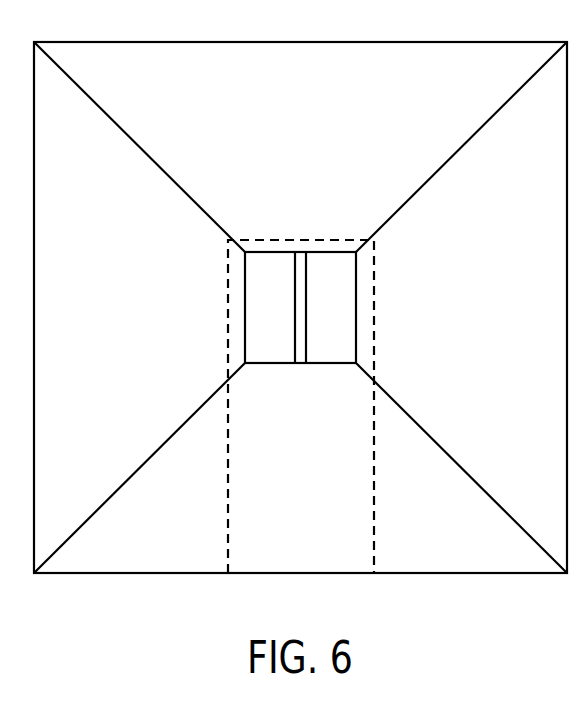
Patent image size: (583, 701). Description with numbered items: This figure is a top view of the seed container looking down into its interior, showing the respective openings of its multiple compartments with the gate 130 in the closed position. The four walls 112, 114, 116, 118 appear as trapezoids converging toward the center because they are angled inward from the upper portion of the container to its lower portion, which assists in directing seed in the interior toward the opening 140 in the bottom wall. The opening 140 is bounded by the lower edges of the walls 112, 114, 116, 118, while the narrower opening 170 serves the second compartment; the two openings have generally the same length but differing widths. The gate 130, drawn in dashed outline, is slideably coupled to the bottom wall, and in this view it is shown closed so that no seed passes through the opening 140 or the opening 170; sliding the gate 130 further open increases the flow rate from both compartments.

The wall 112 is at (440, 508).
The wall 114 is at (325, 143).
The wall 116 is at (506, 386).
The wall 118 is at (138, 288).
The gate 130 is at (378, 528).
The opening 140 is at (283, 314).
The opening 170 is at (300, 253).